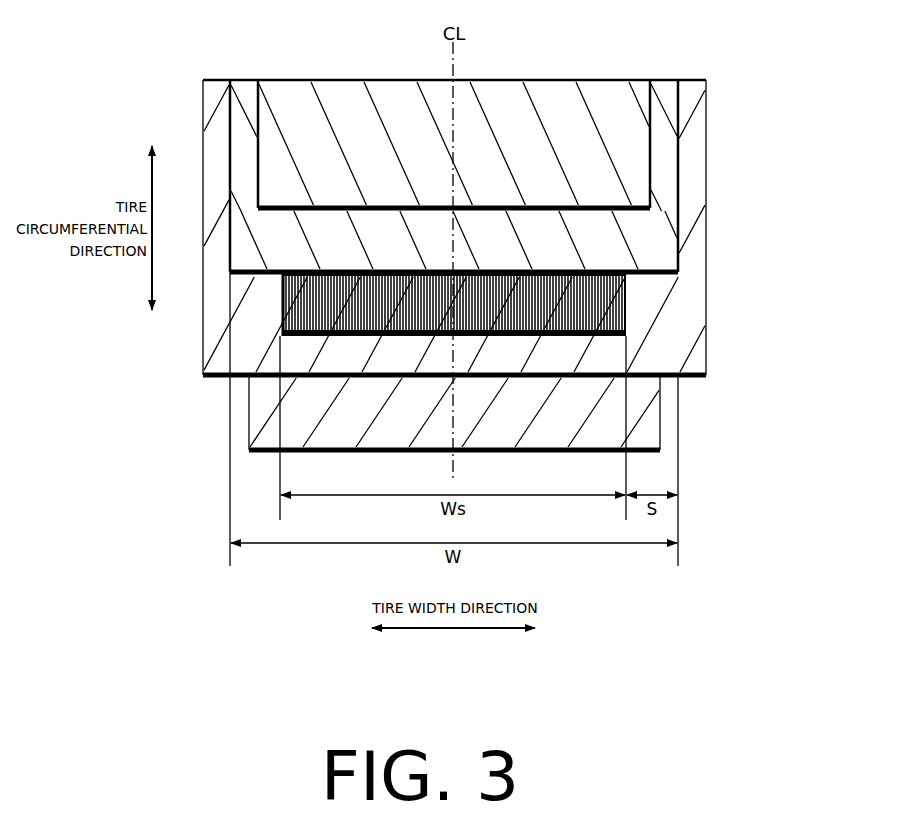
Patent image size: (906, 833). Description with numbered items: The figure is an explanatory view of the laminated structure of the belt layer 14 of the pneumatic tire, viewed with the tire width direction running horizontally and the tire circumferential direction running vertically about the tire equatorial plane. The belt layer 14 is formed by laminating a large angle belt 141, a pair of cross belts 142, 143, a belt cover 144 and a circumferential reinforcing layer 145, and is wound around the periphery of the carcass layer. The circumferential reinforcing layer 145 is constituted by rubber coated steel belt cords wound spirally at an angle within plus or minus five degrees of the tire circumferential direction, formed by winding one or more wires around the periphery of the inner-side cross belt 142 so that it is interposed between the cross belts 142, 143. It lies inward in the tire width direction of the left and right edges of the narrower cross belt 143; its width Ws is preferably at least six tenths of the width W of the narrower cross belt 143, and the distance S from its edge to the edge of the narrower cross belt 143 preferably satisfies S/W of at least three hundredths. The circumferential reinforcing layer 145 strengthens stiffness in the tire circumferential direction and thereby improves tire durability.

The belt layer 14 is at (698, 53).
The large angle belt 141 is at (660, 413).
The inner-side cross belt 142 is at (706, 348).
The narrower cross belt 143 is at (678, 232).
The belt cover 144 is at (650, 181).
The circumferential reinforcing layer 145 is at (626, 305).